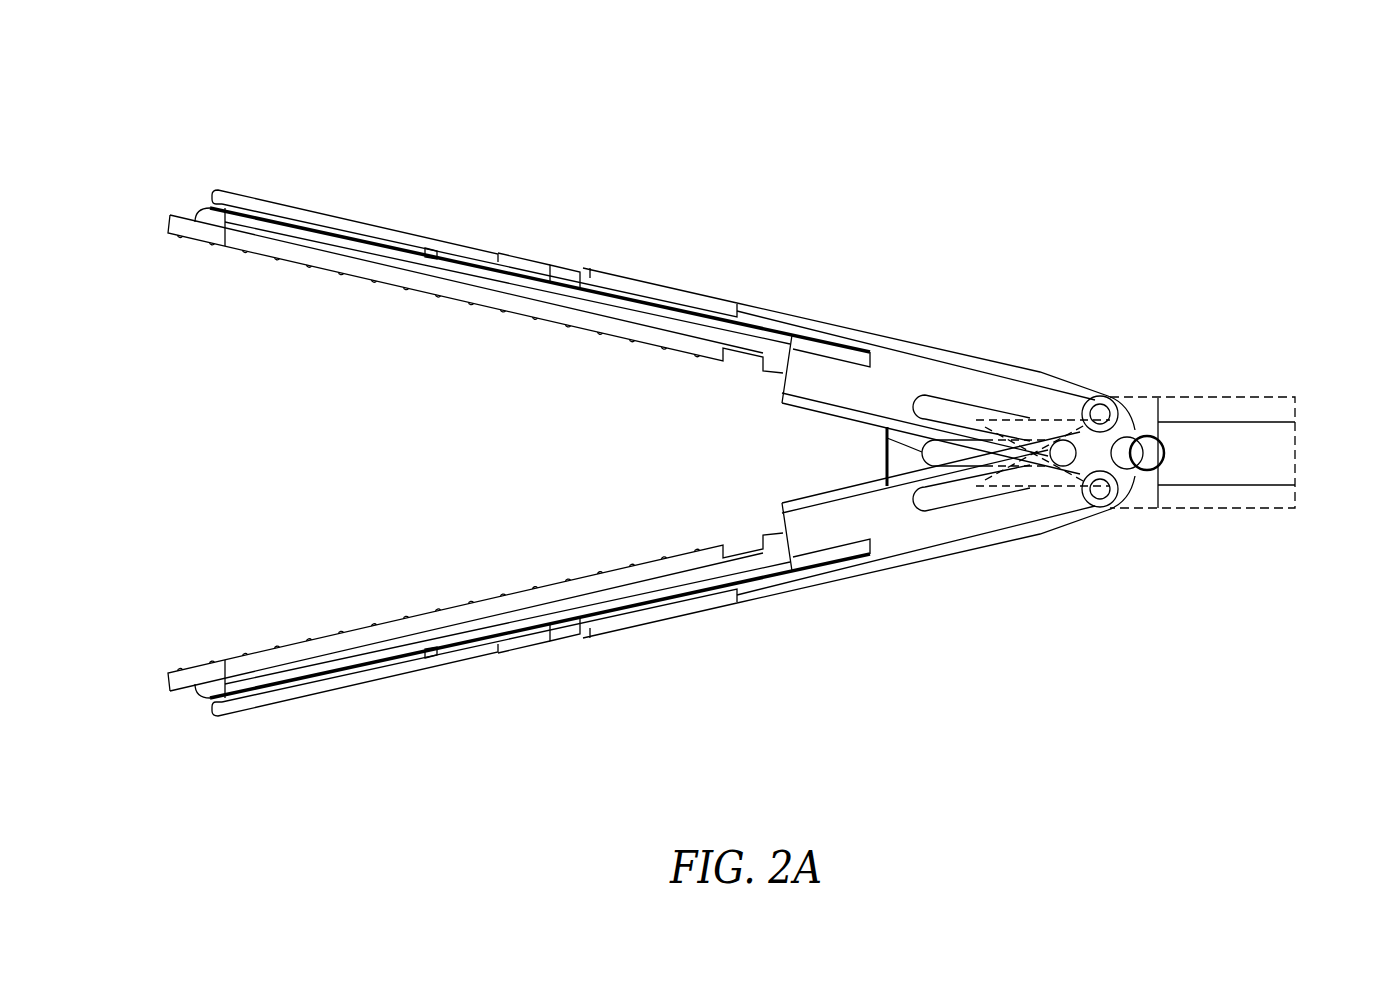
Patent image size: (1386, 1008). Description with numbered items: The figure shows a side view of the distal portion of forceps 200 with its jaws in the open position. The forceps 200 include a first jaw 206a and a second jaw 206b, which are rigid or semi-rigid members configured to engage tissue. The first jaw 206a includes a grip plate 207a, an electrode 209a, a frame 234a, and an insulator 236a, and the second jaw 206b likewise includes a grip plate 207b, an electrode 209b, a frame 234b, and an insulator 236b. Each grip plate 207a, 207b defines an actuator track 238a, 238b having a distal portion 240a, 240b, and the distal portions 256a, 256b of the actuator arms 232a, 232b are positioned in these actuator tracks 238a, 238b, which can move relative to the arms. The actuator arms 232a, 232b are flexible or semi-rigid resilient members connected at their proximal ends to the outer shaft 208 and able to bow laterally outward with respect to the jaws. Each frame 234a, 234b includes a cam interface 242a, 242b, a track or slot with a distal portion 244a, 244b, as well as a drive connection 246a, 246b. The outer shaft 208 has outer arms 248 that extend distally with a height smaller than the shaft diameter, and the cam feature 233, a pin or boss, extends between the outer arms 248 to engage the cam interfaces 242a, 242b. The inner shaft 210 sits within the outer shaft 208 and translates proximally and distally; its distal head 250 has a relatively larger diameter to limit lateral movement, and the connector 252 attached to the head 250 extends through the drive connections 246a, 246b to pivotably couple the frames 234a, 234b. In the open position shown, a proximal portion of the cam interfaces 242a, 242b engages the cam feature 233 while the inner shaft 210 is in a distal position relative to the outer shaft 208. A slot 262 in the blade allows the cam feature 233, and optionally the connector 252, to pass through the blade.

The forceps 200 is at (183, 68).
The first jaw 206a is at (562, 211).
The second jaw 206b is at (618, 655).
The grip plate 207a is at (380, 288).
The grip plate 207b is at (192, 666).
The outer shaft 208 is at (1241, 387).
The electrode 209a is at (547, 323).
The electrode 209b is at (378, 627).
The inner shaft 210 is at (1280, 452).
The actuator arm 232a is at (1005, 362).
The actuator arm 232b is at (931, 566).
The cam feature 233 is at (1093, 510).
The frame 234a is at (760, 386).
The frame 234b is at (768, 514).
The insulator 236a is at (287, 207).
The insulator 236b is at (310, 688).
The actuator track 238a is at (546, 252).
The actuator track 238b is at (486, 660).
The distal portion of actuator track 240a is at (440, 251).
The distal portion of actuator track 240b is at (452, 648).
The cam interface 242a is at (944, 384).
The cam interface 242b is at (947, 498).
The distal portion of cam interface 244a is at (877, 367).
The distal portion of cam interface 244b is at (917, 521).
The drive connection 246a is at (1104, 396).
The drive connection 246b is at (1138, 470).
The outer arms 248 is at (1050, 380).
The head 250 is at (1127, 437).
The connector 252 is at (1149, 436).
The distal portion of actuator arm 256a is at (562, 270).
The distal portion of actuator arm 256b is at (566, 640).
The slot 262 is at (885, 441).